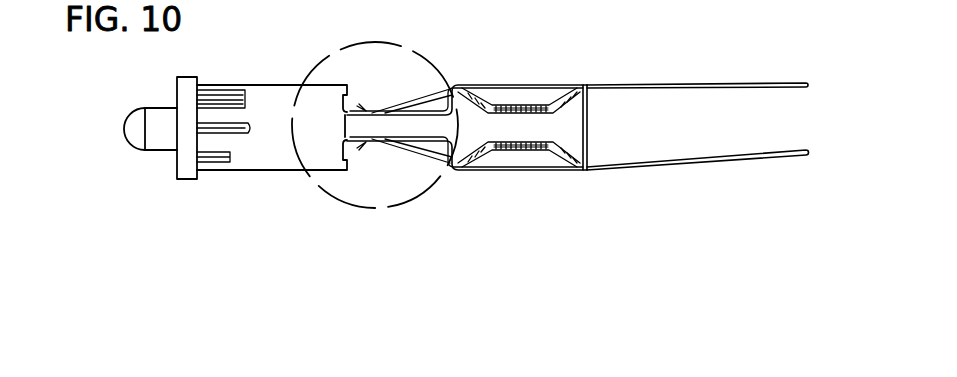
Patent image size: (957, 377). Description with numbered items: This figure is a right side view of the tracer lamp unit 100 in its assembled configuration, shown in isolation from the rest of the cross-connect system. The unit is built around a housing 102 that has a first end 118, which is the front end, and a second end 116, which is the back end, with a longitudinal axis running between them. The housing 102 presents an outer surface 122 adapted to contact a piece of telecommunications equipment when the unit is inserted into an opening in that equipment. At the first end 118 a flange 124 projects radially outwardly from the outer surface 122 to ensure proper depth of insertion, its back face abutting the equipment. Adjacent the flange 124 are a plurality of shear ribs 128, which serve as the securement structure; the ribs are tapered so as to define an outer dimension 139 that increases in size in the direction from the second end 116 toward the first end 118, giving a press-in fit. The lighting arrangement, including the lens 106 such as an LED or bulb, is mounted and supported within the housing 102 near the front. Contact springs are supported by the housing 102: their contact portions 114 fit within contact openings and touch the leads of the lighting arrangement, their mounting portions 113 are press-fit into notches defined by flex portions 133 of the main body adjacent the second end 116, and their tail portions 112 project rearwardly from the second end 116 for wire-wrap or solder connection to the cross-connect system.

The tracer lamp unit 100 is at (812, 247).
The housing 102 is at (330, 180).
The lens 106 is at (133, 131).
The tail portions 112 is at (798, 80).
The mounting portions 113 is at (515, 105).
The contact portions 114 is at (384, 138).
The second end 116 is at (768, 122).
The first end 118 is at (130, 175).
The outer surface 122 is at (298, 85).
The flange 124 is at (188, 182).
The shear ribs 128 is at (203, 113).
The flex portions 133 is at (522, 95).
The outer dimension 139 is at (213, 148).